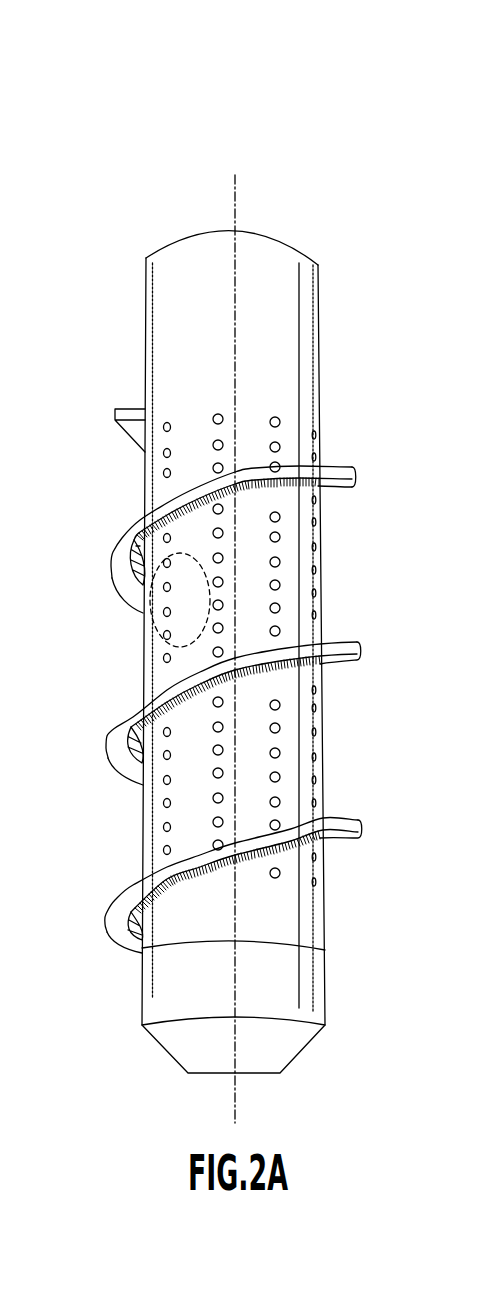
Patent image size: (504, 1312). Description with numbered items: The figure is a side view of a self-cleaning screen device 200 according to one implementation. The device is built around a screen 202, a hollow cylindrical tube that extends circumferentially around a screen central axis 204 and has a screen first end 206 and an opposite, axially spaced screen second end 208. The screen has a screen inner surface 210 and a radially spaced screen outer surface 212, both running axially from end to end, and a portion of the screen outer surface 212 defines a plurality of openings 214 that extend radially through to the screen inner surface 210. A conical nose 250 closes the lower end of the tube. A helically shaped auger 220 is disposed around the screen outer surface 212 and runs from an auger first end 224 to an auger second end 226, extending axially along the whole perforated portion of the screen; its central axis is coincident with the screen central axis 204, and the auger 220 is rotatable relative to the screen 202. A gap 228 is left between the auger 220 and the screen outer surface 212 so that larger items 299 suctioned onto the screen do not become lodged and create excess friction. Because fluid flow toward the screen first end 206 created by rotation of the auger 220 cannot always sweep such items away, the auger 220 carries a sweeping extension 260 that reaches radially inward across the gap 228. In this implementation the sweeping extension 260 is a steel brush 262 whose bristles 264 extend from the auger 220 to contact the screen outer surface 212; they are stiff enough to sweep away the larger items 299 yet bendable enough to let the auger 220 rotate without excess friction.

The self-cleaning screen device 200 is at (137, 122).
The screen 202 is at (169, 362).
The screen central axis 204 is at (304, 629).
The screen first end 206 is at (231, 216).
The screen second end 208 is at (302, 948).
The screen inner surface 210 is at (186, 233).
The screen outer surface 212 is at (305, 316).
The plurality of openings 214 is at (278, 606).
The auger 220 is at (217, 518).
The auger first end 224 is at (115, 410).
The auger second end 226 is at (128, 952).
The gap 228 is at (140, 542).
The conical bottom 250 is at (293, 1060).
The sweeping extension 260 is at (190, 503).
The steel brush 262 is at (110, 554).
The bristles 264 is at (310, 668).
The larger items 299 is at (178, 645).